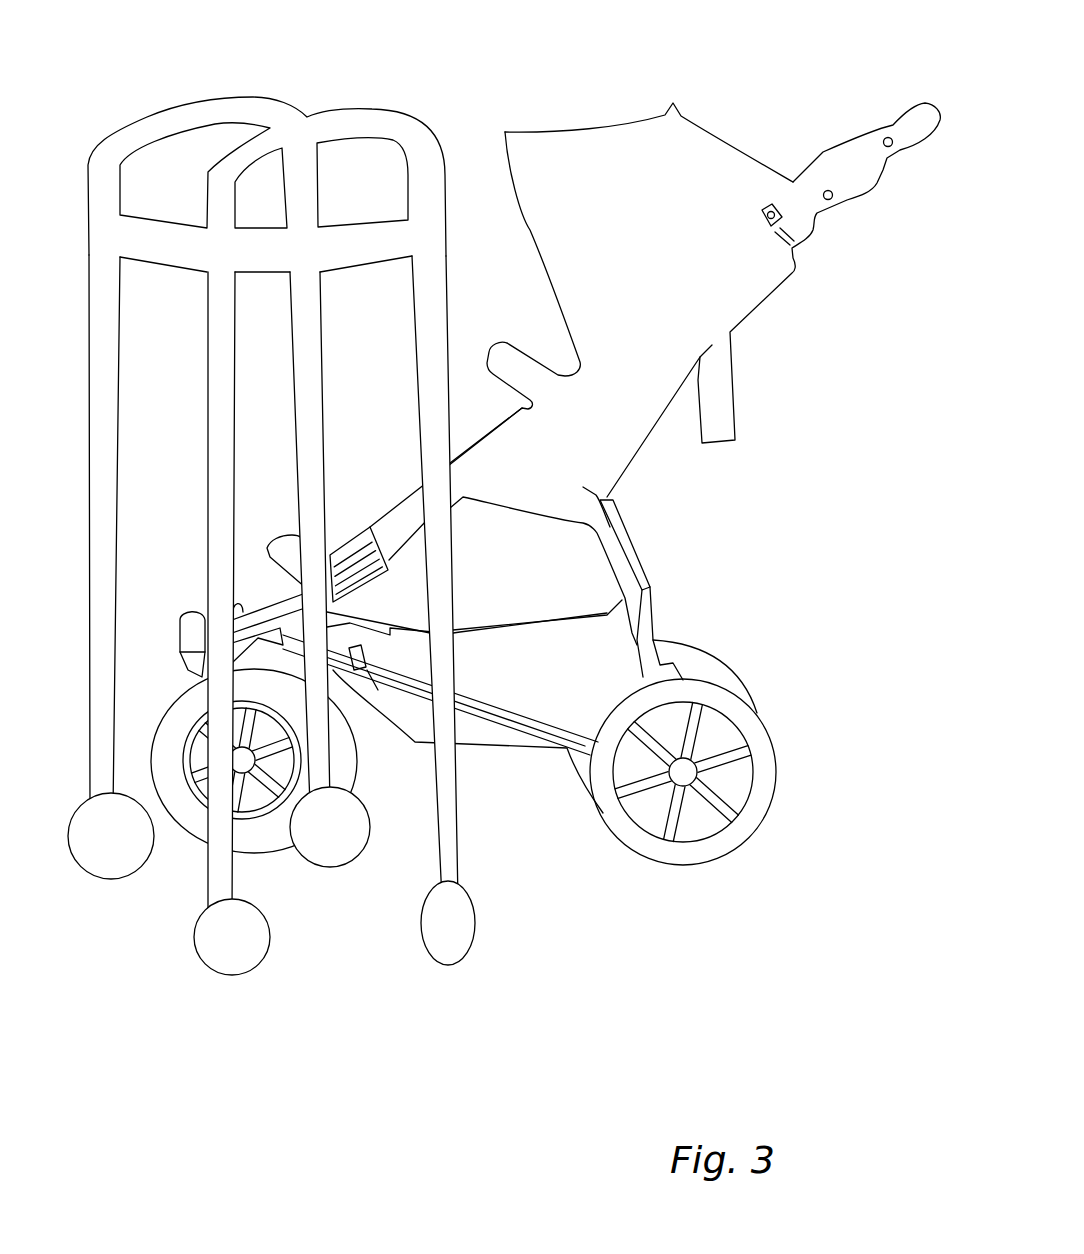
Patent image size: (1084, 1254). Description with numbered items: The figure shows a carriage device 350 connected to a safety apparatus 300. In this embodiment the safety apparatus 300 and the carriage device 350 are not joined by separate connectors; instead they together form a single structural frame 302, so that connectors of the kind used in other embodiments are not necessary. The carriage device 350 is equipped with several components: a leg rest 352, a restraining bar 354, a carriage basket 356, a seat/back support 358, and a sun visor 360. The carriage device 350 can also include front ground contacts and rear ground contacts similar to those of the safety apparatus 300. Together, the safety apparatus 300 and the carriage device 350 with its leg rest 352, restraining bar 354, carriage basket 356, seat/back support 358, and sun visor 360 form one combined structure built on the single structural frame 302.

The safety apparatus 300 is at (392, 103).
The single structural frame 302 is at (467, 717).
The carriage device 350 is at (762, 313).
The leg rest 352 is at (272, 537).
The restraining bar 354 is at (472, 342).
The carriage basket 356 is at (590, 666).
The seat/back support 358 is at (605, 428).
The sun visor 360 is at (585, 157).